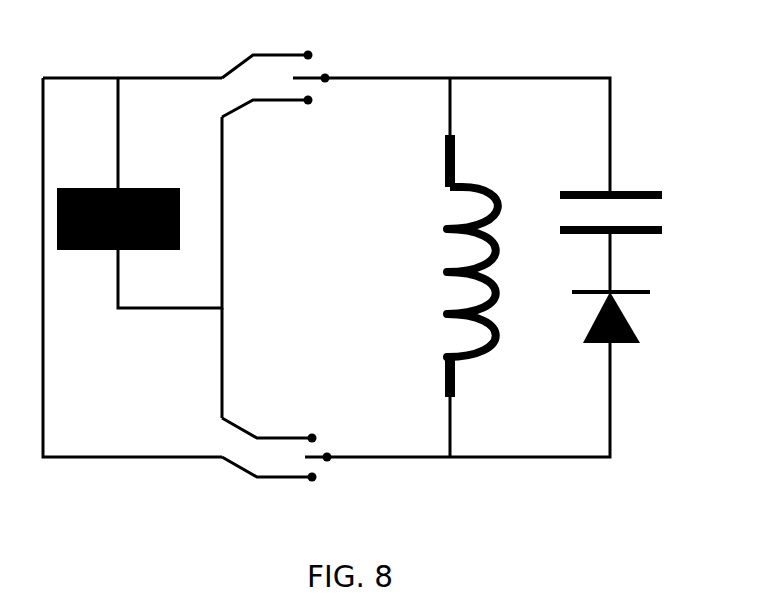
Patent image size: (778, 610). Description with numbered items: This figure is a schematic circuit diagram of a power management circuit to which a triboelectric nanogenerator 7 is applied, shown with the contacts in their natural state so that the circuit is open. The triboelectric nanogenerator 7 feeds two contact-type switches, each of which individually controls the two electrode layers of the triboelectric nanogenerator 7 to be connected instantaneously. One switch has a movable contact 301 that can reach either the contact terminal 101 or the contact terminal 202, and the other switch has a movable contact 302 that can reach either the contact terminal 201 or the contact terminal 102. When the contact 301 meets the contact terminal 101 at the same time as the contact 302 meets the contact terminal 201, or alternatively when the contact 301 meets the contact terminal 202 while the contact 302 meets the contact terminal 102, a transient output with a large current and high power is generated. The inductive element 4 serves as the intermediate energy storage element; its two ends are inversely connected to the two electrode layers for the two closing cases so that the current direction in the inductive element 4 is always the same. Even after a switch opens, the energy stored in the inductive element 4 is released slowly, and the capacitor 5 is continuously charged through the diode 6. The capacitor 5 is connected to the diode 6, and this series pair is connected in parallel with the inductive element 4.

The contact terminal 101 is at (267, 48).
The contact terminal 102 is at (269, 484).
The contact terminal 201 is at (269, 416).
The contact terminal 202 is at (267, 115).
The contact 301 is at (341, 63).
The contact 302 is at (341, 443).
The inductive element 4 is at (472, 266).
The capacitor 5 is at (611, 193).
The diode 6 is at (611, 317).
The triboelectric nanogenerator 7 is at (118, 241).